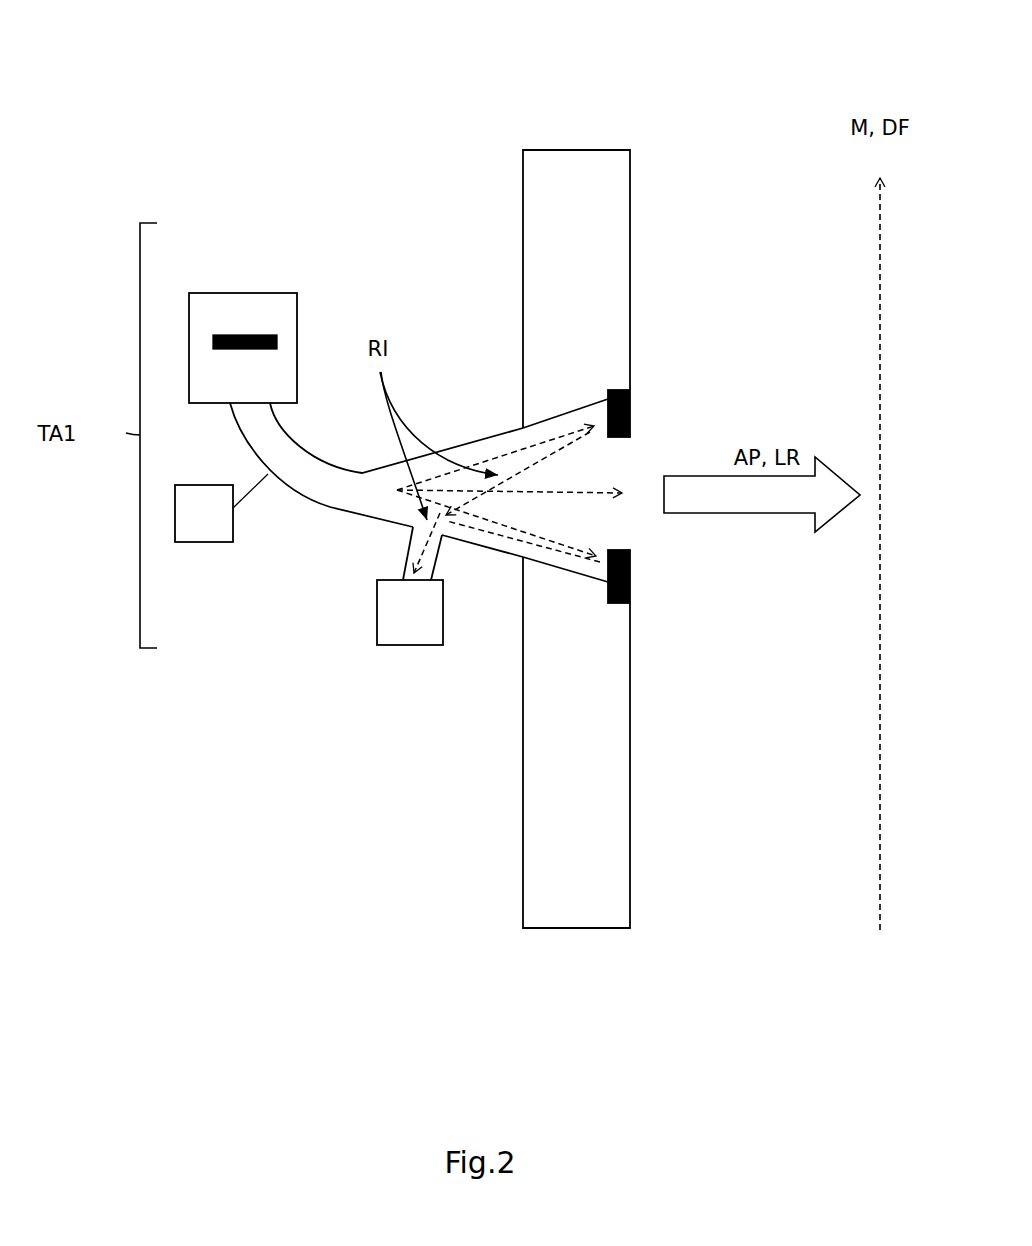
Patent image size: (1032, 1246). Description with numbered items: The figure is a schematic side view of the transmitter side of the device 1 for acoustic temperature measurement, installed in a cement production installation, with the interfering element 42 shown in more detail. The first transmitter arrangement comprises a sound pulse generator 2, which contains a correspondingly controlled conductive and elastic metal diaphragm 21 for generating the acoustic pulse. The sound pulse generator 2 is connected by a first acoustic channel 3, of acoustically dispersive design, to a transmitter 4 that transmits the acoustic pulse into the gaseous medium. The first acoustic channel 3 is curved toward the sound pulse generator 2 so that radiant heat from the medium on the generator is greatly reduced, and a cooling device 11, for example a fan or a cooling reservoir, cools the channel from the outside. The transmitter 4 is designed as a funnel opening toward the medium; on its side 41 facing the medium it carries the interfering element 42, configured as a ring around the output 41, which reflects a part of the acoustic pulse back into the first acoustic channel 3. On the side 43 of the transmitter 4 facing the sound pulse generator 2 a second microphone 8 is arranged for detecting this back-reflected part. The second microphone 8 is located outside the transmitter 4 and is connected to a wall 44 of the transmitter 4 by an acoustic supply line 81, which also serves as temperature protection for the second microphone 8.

The device for acoustic temperature measurement 1 is at (452, 96).
The sound pulse generator 2 is at (221, 285).
The conductive and elastic metal diaphragm 21 is at (247, 325).
The first acoustic channel 3 is at (304, 440).
The transmitter 4 is at (571, 463).
The side of the transmitter facing the medium 41 is at (644, 517).
The interfering element 42 is at (640, 413).
The side of the transmitter facing the sound pulse generator 43 is at (336, 492).
The wall of the transmitter 44 is at (489, 560).
The second microphone 8 is at (409, 654).
The acoustic supply line 81 is at (396, 560).
The cooling device 11 is at (205, 550).